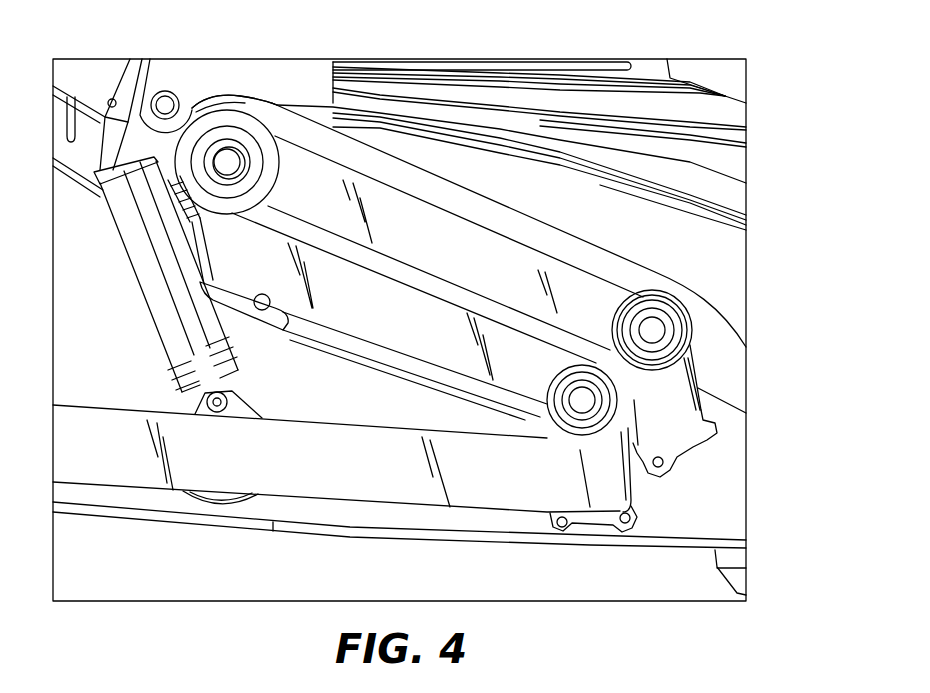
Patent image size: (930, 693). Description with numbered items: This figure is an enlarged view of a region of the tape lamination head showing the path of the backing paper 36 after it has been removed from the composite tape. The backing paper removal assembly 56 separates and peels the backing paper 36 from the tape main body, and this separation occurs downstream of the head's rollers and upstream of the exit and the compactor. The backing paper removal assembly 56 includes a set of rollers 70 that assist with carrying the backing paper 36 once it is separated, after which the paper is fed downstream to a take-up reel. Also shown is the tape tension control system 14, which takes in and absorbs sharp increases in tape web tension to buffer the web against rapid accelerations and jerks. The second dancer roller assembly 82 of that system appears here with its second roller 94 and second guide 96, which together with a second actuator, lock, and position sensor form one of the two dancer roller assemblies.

The second dancer roller assembly 82 is at (212, 95).
The second roller 94 is at (232, 130).
The backing paper 36 is at (483, 240).
The rollers 70 is at (668, 300).
The tape tension control system 14 is at (190, 228).
The second guide 96 is at (297, 318).
The backing paper removal assembly 56 is at (547, 557).